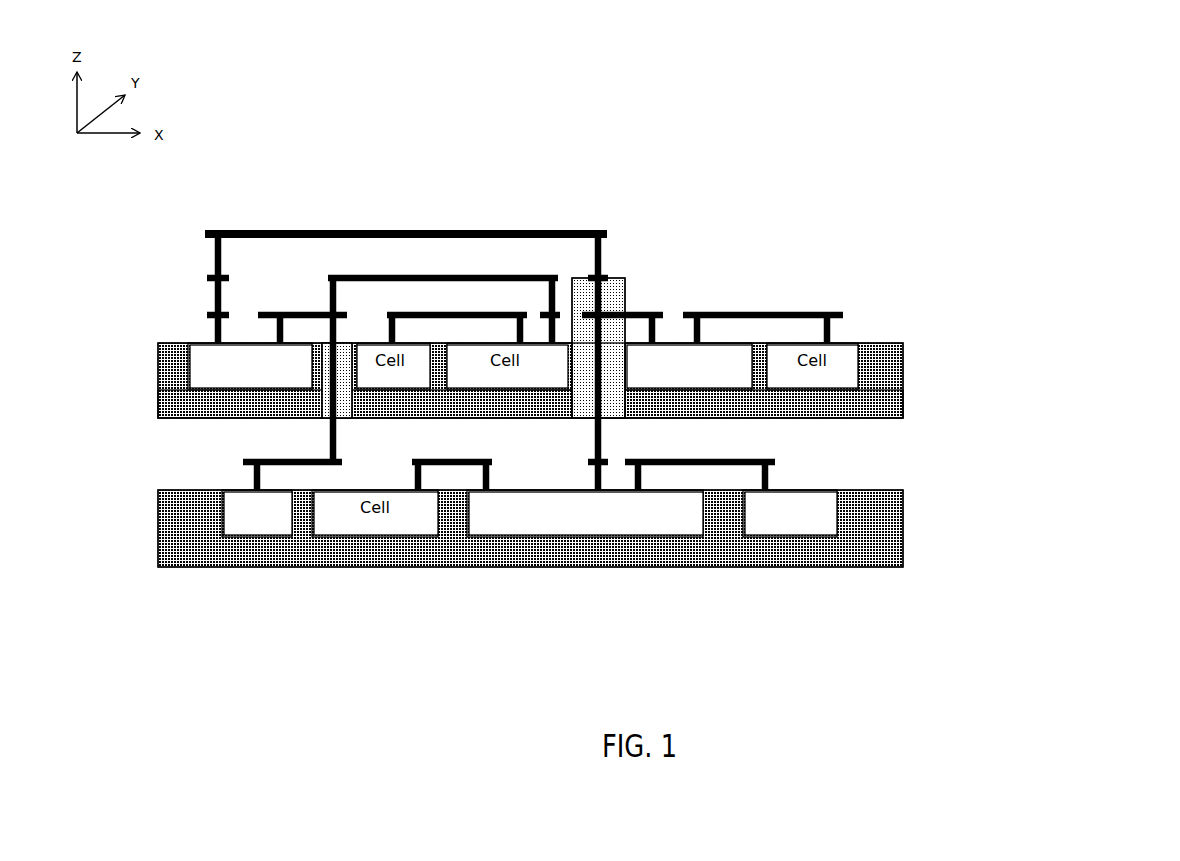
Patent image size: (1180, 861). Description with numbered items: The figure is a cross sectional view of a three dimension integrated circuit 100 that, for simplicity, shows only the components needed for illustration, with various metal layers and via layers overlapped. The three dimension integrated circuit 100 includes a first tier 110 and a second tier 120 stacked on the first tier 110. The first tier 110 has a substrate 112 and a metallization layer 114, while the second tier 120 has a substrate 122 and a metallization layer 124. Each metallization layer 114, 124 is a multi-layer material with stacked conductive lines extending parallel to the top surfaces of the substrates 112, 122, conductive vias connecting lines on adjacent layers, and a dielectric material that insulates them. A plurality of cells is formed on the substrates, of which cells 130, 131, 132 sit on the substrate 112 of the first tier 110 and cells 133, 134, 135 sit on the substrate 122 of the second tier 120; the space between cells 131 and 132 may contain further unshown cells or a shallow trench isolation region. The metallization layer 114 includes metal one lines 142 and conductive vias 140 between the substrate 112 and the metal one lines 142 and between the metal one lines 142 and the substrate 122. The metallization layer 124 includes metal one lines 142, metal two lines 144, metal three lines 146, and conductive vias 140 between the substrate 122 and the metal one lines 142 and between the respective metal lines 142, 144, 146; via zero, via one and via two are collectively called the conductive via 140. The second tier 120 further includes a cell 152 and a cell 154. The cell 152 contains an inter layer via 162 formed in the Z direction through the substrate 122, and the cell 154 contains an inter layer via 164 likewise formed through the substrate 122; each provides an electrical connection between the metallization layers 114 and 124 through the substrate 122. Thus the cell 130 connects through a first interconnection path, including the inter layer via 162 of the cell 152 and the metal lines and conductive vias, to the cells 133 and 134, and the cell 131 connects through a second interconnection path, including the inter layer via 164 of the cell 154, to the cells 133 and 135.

The three dimension integrated circuit 100 is at (935, 165).
The first tier 110 is at (1082, 422).
The substrate 112 is at (982, 492).
The metallization layer 114 is at (982, 422).
The second tier 120 is at (1082, 233).
The substrate 122 is at (982, 420).
The metallization layer 124 is at (982, 233).
The cell 130 is at (250, 540).
The cell 131 is at (590, 538).
The cell 132 is at (788, 538).
The cell 133 is at (186, 396).
The cell 134 is at (533, 393).
The cell 135 is at (682, 342).
The conductive via 140 is at (330, 447).
The metal one line 142 is at (208, 315).
The metal two line 144 is at (208, 279).
The metal three line 146 is at (206, 232).
The cell 152 is at (337, 342).
The cell 154 is at (623, 277).
The inter layer via 162 is at (337, 375).
The inter layer via 164 is at (600, 375).